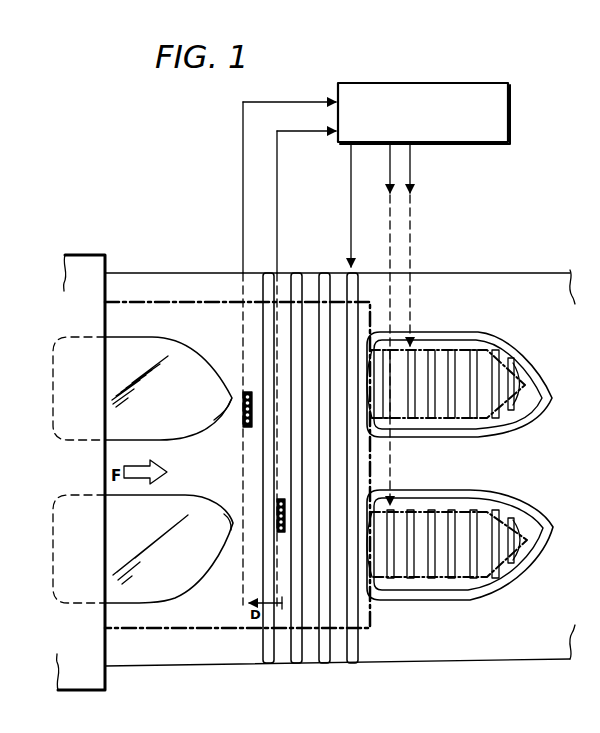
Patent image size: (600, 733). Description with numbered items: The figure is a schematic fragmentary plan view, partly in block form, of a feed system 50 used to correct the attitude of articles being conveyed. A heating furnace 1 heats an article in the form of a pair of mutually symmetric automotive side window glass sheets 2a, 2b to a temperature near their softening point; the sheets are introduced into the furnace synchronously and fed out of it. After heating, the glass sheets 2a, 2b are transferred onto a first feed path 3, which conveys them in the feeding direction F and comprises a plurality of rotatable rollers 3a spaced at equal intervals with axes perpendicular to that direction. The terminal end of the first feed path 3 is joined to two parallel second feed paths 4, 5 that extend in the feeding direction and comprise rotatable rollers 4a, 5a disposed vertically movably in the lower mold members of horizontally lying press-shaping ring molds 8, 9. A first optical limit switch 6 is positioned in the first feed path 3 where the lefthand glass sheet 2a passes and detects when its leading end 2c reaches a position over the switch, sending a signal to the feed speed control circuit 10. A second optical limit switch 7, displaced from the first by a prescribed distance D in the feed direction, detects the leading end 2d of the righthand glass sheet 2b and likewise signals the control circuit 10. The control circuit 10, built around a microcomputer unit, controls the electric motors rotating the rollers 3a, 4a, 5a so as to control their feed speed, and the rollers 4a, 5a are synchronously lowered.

The feed system 50 is at (185, 146).
The heating furnace 1 is at (90, 298).
The first feed path 3 is at (203, 300).
The rotatable rollers 3a is at (352, 325).
The lefthand glass sheet 2a is at (192, 362).
The righthand glass sheet 2b is at (160, 585).
The leading end of glass sheet 2a 2c is at (218, 412).
The leading end of glass sheet 2b 2d is at (225, 522).
The first optical limit switch 6 is at (247, 390).
The second optical limit switch 7 is at (277, 502).
The lefthand second feed path 4 is at (397, 420).
The rotatable rollers 4a is at (470, 365).
The righthand second feed path 5 is at (482, 510).
The rotatable rollers 5a is at (452, 557).
The press-shaping ring mold 8 is at (514, 360).
The press-shaping ring mold 9 is at (538, 506).
The feed speed control circuit 10 is at (493, 143).